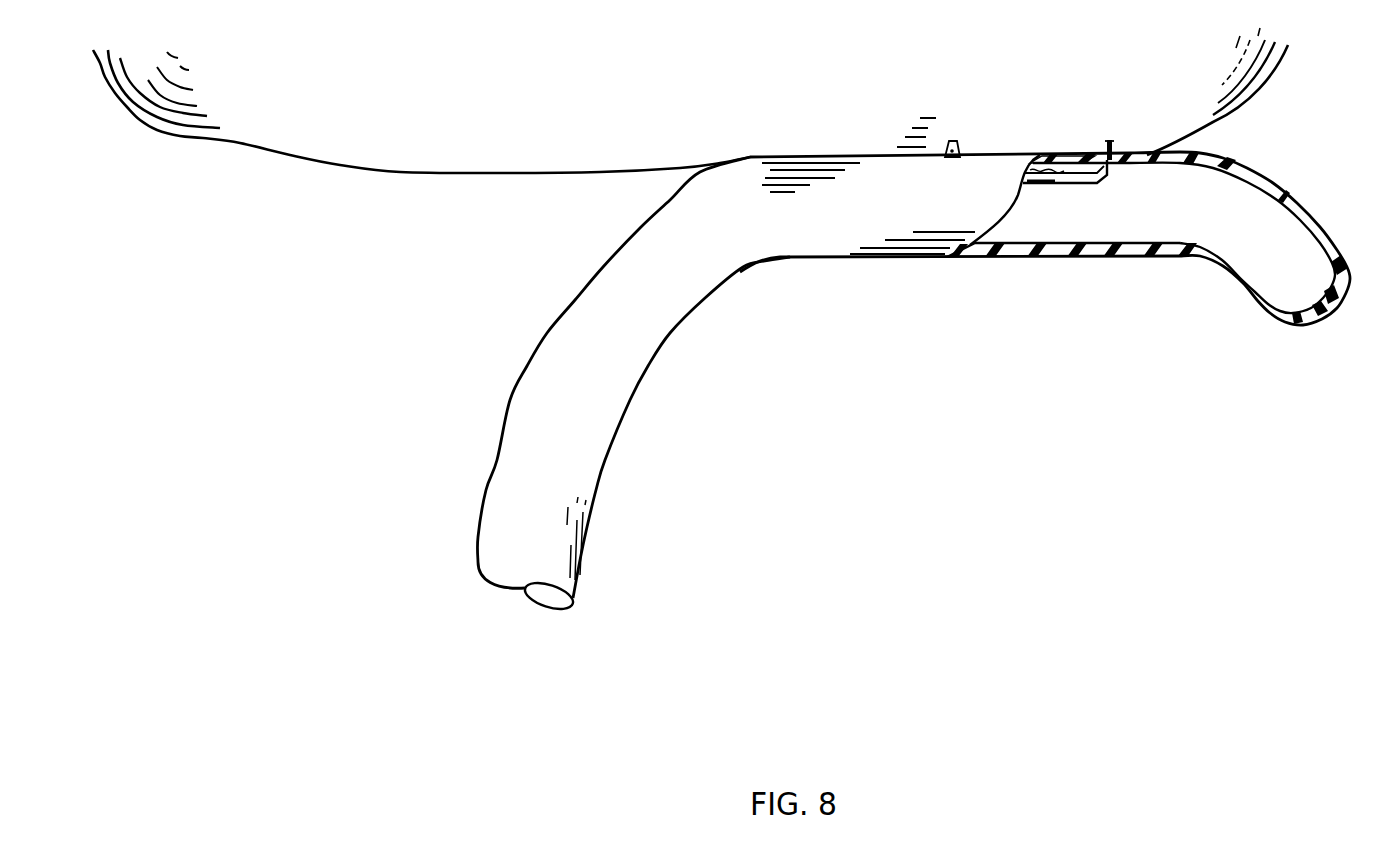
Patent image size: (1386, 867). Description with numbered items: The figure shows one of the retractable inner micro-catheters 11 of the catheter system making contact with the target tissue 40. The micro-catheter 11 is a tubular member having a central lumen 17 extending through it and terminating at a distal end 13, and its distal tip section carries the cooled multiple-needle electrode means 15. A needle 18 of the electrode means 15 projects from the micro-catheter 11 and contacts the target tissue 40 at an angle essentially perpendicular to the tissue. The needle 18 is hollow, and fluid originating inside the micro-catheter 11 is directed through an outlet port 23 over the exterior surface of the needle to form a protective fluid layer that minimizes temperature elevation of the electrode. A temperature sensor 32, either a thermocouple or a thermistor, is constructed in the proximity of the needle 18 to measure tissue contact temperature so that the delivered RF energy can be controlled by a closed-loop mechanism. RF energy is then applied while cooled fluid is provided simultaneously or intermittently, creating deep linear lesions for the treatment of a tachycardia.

The micro-catheter 11 is at (502, 427).
The distal end 13 is at (1275, 323).
The electrode means 15 is at (1057, 258).
The central lumen 17 is at (1180, 198).
The needle 18 is at (967, 138).
The outlet port 23 is at (1110, 140).
The temperature sensor 32 is at (1073, 150).
The target tissue 40 is at (272, 120).